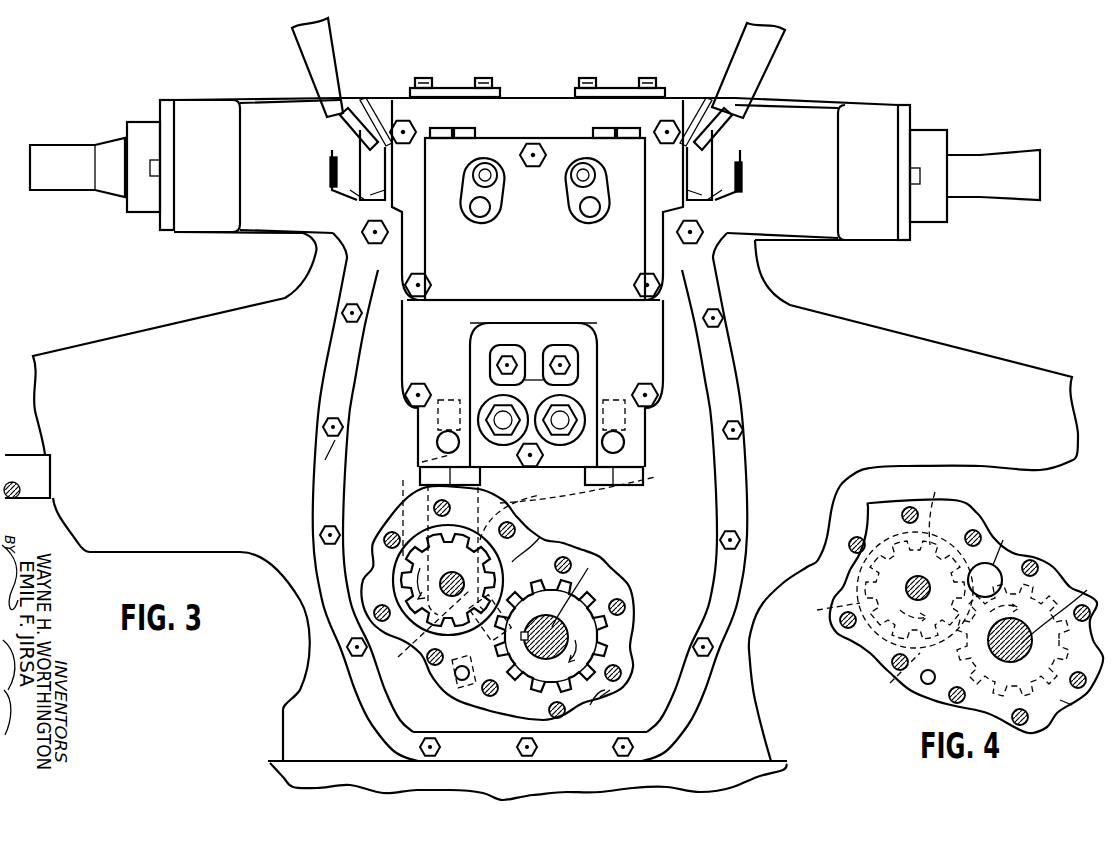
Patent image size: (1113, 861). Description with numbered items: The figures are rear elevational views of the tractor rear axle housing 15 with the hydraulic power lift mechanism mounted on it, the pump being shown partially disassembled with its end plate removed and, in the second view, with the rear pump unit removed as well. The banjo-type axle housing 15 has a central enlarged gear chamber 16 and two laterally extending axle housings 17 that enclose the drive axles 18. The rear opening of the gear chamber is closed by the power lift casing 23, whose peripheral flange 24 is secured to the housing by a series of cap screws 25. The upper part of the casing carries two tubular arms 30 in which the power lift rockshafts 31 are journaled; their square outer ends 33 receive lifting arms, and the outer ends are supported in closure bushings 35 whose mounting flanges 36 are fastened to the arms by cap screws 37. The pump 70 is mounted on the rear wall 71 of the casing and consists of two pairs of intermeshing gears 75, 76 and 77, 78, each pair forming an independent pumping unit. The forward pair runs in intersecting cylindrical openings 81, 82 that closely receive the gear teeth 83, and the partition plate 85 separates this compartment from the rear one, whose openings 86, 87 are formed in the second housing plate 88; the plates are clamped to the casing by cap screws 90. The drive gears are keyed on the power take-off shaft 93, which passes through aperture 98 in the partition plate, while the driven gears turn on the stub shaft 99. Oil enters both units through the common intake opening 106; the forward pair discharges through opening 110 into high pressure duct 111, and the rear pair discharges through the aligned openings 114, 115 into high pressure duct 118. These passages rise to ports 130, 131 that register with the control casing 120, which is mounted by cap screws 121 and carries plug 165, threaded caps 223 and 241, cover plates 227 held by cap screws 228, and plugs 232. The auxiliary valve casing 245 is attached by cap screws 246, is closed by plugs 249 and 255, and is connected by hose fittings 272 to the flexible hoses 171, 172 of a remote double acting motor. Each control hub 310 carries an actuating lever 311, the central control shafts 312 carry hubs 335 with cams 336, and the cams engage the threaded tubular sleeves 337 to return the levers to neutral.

In FIG. 3, the rear axle housing 15 is at (833, 403).
In FIG. 3, the gear chamber 16 is at (305, 590).
In FIG. 3, the axle housings 17 is at (145, 340).
In FIG. 3, the drive axles 18 is at (18, 462).
In FIG. 3, the power lift casing 23 is at (530, 497).
In FIG. 3, the flange 24 is at (338, 383).
In FIG. 3, the cap screws 25 is at (328, 532).
In FIG. 3, the tubular arms 30 is at (536, 169).
In FIG. 3, the power lift rockshafts 31 is at (115, 145).
In FIG. 3, the outer ends of rockshafts 33 is at (47, 152).
In FIG. 3, the closure bushings 35 is at (930, 142).
In FIG. 3, the mounting flanges 36 is at (165, 118).
In FIG. 3, the cap screws 37 is at (160, 165).
In FIG. 3, the pump 70 is at (621, 585).
In FIG. 4, the pump 70 is at (1081, 583).
In FIG. 3, the rear wall 71 is at (702, 562).
In FIG. 3, the driving gear 75 is at (551, 636).
In FIG. 3, the driven gear 76 is at (448, 580).
In FIG. 4, the driving gear 77 is at (1048, 588).
In FIG. 4, the driven gear 78 is at (934, 507).
In FIG. 4, the cylindrical opening 81 is at (1062, 708).
In FIG. 4, the cylindrical opening 82 is at (817, 610).
In FIG. 4, the gear teeth 83 is at (963, 614).
In FIG. 4, the partition plate 85 is at (1077, 698).
In FIG. 3, the cylindrical opening 86 is at (592, 700).
In FIG. 3, the cylindrical opening 87 is at (422, 640).
In FIG. 3, the second housing plate 88 is at (605, 697).
In FIG. 3, the cap screws 90 is at (550, 712).
In FIG. 4, the cap screws 90 is at (903, 510).
In FIG. 3, the power take-off shaft 93 is at (581, 587).
In FIG. 4, the power take-off shaft 93 is at (1065, 606).
In FIG. 4, the aperture 98 is at (1002, 655).
In FIG. 3, the stub shaft 99 is at (448, 597).
In FIG. 4, the stub shaft 99 is at (929, 598).
In FIG. 3, the opening 106 is at (542, 538).
In FIG. 4, the opening 106 is at (1011, 542).
In FIG. 3, the opening 110 is at (498, 632).
In FIG. 4, the opening 110 is at (900, 680).
In FIG. 3, the high pressure duct 111 is at (422, 462).
In FIG. 3, the axially extending opening 114 is at (457, 678).
In FIG. 4, the opening 115 is at (925, 685).
In FIG. 3, the high pressure duct 118 is at (538, 493).
In FIG. 3, the control casing 120 is at (533, 383).
In FIG. 3, the cap screws 121 is at (403, 125).
In FIG. 3, the port 130 is at (438, 417).
In FIG. 3, the port 131 is at (625, 420).
In FIG. 3, the plug 165 is at (645, 482).
In FIG. 3, the flexible hose 171 is at (497, 176).
In FIG. 3, the flexible hose 172 is at (573, 182).
In FIG. 3, the threaded cap 223 is at (562, 355).
In FIG. 3, the cover plates 227 is at (450, 92).
In FIG. 3, the cap screws 228 is at (484, 78).
In FIG. 3, the plug 232 is at (436, 442).
In FIG. 3, the threaded caps 241 is at (498, 415).
In FIG. 3, the auxiliary valve casing 245 is at (535, 219).
In FIG. 3, the cap screws 246 is at (533, 143).
In FIG. 3, the plugs 249 is at (440, 310).
In FIG. 3, the plugs 255 is at (440, 133).
In FIG. 3, the hose connection fittings 272 is at (476, 178).
In FIG. 3, the hub 310 is at (532, 216).
In FIG. 3, the actuating lever 311 is at (364, 112).
In FIG. 3, the central control shaft 312 is at (332, 175).
In FIG. 3, the hub 335 is at (350, 192).
In FIG. 3, the cam 336 is at (342, 124).
In FIG. 3, the tubular sleeve 337 is at (322, 50).